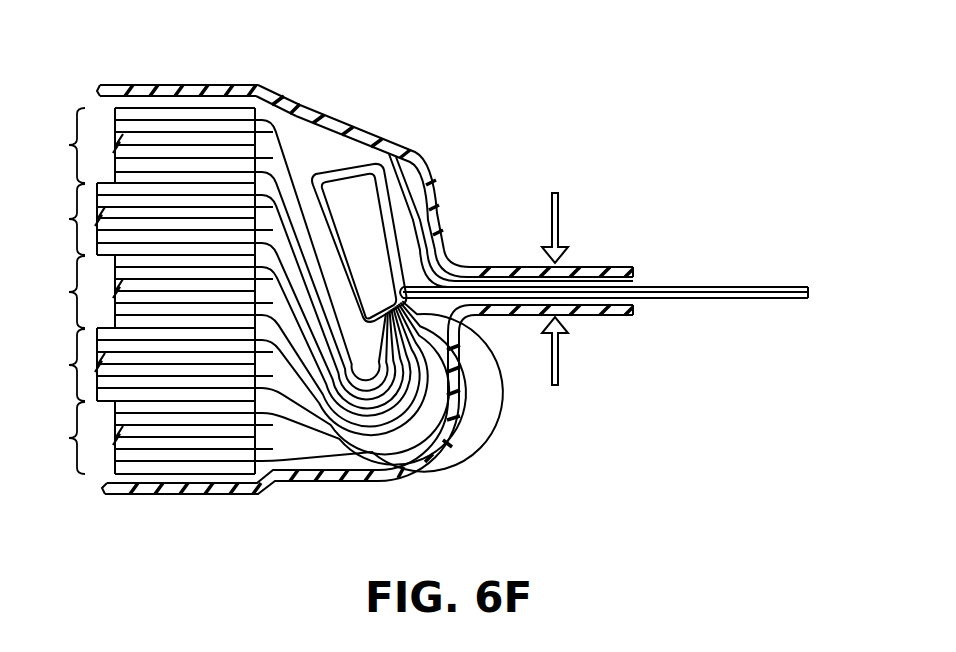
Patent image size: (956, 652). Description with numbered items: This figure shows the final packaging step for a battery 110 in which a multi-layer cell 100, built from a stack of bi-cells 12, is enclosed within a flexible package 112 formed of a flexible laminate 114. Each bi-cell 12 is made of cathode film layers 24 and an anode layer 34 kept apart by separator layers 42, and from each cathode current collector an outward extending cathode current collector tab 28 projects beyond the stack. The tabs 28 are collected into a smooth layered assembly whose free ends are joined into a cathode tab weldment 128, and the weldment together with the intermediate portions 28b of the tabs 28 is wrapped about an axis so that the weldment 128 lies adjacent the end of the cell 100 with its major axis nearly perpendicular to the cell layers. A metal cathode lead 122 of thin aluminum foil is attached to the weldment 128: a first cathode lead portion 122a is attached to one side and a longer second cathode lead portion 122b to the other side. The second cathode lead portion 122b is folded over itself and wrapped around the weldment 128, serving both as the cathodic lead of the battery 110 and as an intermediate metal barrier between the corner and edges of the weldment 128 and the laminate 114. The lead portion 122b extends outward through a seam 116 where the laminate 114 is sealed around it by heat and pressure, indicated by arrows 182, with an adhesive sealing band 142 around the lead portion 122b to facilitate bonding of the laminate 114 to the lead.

The bi-cell 12 is at (155, 291).
The cathode film layer 24 is at (138, 456).
The cathode current collector tab 28 is at (301, 180).
The intermediate portion of cathode current collector tab 28b is at (405, 447).
The electrode layer 34 is at (193, 432).
The separator layer 42 is at (276, 456).
The multi-layer cell 100 is at (140, 95).
The battery 110 is at (472, 100).
The flexible package 112 is at (290, 97).
The flexible laminate 114 is at (358, 128).
The seam 116 is at (598, 263).
The cathode lead 122 is at (713, 284).
The first cathode lead portion 122a is at (397, 257).
The second cathode lead portion 122b is at (383, 177).
The cathode tab weldment 128 is at (427, 220).
The adhesive/sealing band 142 is at (648, 297).
The arrows 182 is at (561, 212).